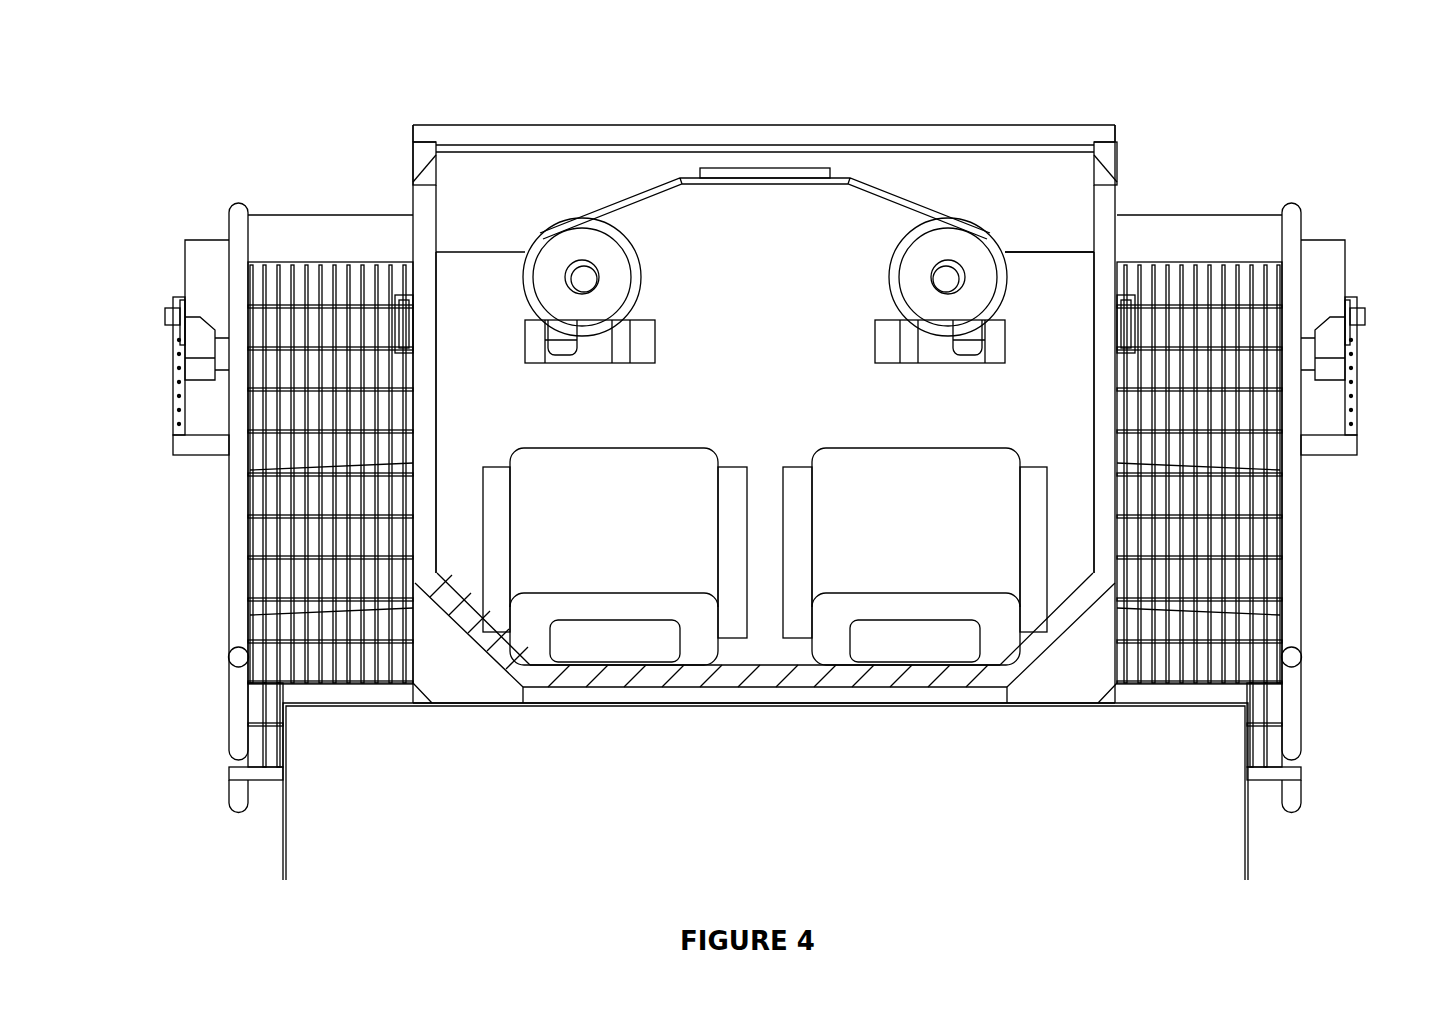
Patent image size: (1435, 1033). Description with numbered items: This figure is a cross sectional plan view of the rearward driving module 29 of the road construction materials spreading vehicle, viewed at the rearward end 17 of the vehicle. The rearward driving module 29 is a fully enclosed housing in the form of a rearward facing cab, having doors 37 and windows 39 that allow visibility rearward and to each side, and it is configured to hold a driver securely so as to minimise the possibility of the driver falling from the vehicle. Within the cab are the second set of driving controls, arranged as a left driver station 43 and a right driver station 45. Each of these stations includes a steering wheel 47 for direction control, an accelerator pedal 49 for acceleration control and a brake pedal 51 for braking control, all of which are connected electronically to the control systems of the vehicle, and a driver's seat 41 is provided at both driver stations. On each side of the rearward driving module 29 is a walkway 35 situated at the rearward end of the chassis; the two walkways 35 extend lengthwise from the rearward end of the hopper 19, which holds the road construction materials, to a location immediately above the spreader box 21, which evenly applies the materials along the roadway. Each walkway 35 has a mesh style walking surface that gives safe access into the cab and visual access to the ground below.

The rearward end 17 is at (1205, 203).
The hopper 19 is at (1250, 842).
The spreader box 21 is at (1348, 262).
The rearward driving module 29 is at (452, 655).
The walkway 35 is at (246, 572).
The door 37 is at (438, 425).
The window 39 is at (1052, 145).
The driver's seat 41 is at (718, 456).
The left driver station 43 is at (948, 202).
The right driver station 45 is at (585, 185).
The steering wheel 47 is at (537, 246).
The accelerator pedal 49 is at (542, 352).
The brake pedal 51 is at (635, 352).